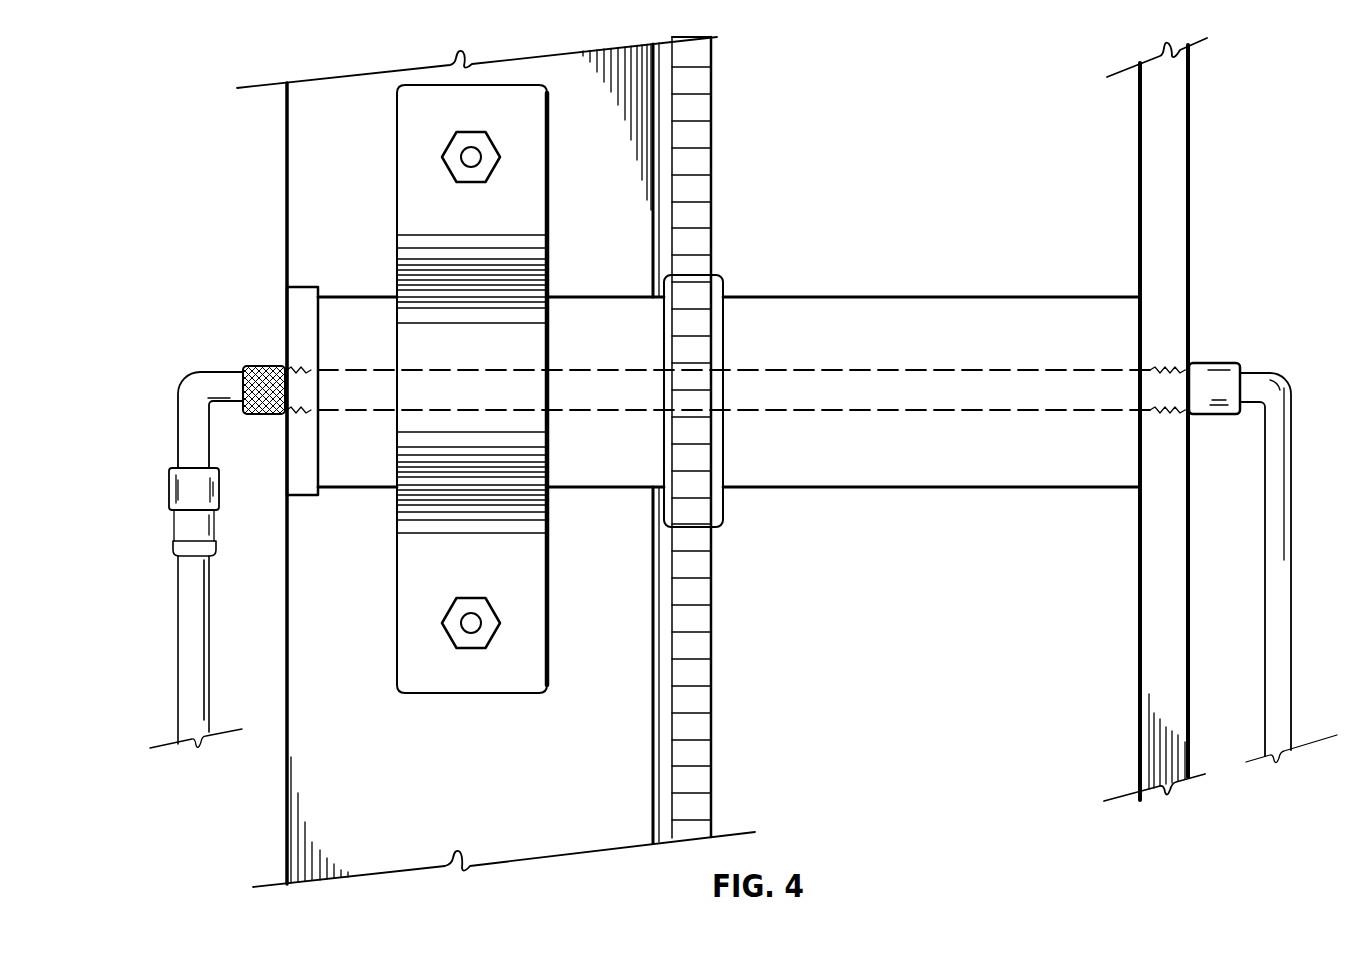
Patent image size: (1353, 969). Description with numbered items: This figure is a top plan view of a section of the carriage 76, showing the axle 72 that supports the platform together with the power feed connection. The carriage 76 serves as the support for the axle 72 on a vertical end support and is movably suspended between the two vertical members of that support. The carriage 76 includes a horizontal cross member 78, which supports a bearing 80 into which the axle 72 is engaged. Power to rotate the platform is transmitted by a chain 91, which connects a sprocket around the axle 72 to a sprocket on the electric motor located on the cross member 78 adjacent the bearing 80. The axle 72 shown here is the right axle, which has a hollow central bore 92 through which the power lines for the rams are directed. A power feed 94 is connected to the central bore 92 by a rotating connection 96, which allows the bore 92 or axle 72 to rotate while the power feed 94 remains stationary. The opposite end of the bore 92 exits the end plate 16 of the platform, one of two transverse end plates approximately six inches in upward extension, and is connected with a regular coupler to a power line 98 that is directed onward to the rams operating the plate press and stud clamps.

The end plate 16 is at (1173, 158).
The axle 72 is at (810, 297).
The carriage 76 is at (320, 253).
The cross member 78 is at (315, 160).
The bearing 80 is at (513, 125).
The chain 91 is at (697, 622).
The central bore 92 is at (948, 385).
The power feed 94 is at (193, 615).
The rotating connection 96 is at (240, 368).
The power line 98 is at (1277, 618).